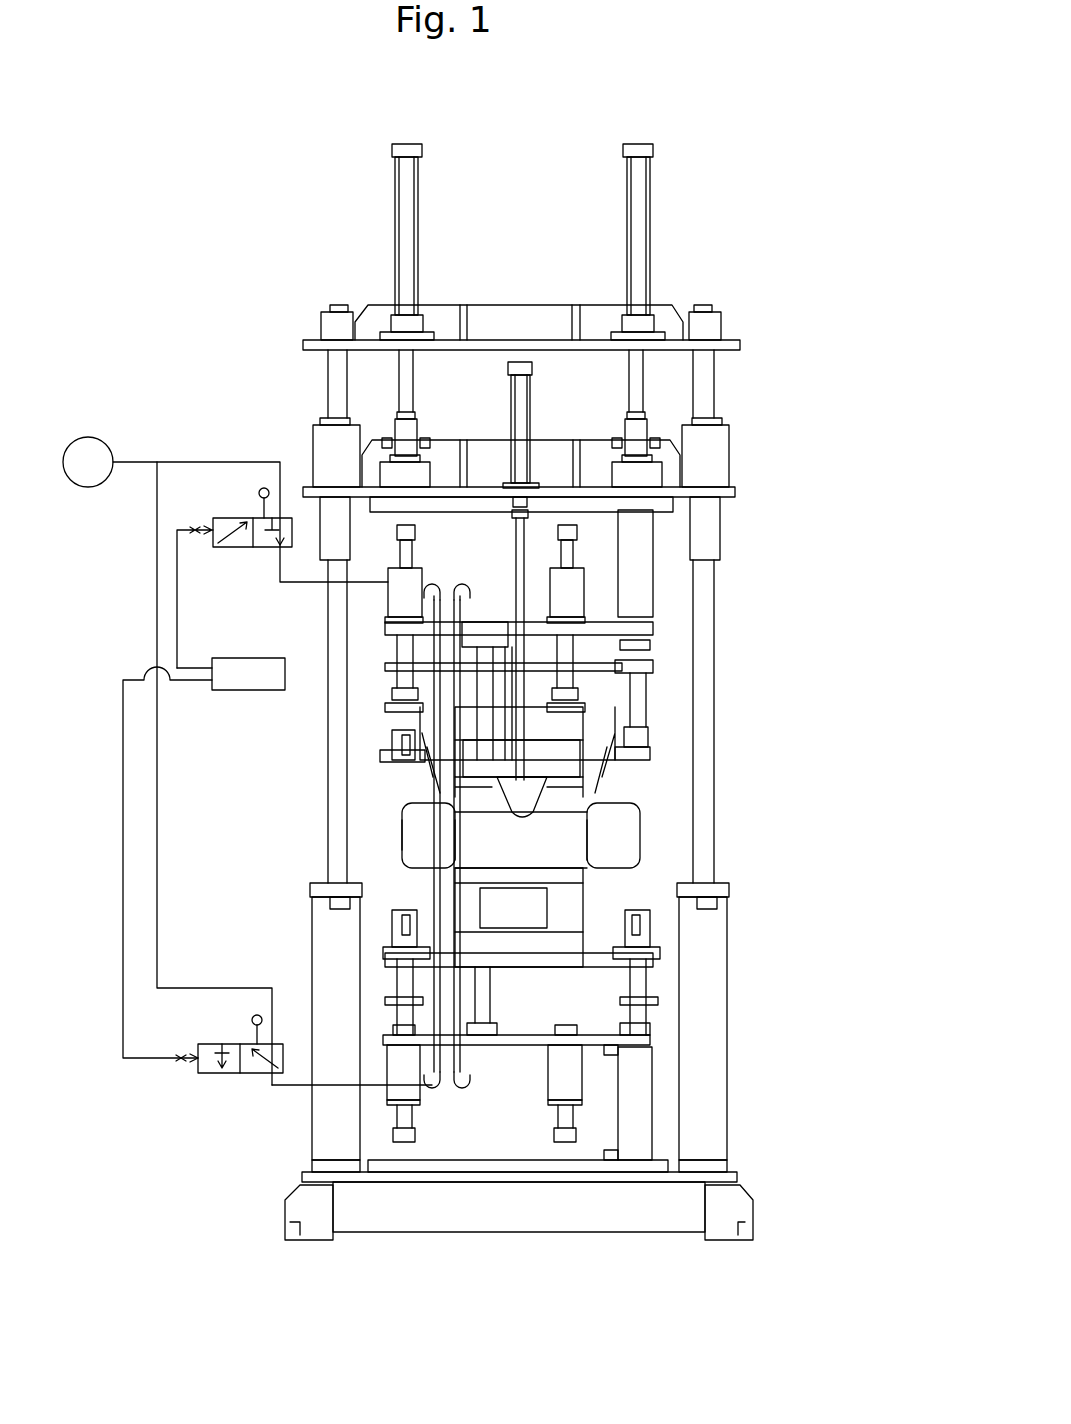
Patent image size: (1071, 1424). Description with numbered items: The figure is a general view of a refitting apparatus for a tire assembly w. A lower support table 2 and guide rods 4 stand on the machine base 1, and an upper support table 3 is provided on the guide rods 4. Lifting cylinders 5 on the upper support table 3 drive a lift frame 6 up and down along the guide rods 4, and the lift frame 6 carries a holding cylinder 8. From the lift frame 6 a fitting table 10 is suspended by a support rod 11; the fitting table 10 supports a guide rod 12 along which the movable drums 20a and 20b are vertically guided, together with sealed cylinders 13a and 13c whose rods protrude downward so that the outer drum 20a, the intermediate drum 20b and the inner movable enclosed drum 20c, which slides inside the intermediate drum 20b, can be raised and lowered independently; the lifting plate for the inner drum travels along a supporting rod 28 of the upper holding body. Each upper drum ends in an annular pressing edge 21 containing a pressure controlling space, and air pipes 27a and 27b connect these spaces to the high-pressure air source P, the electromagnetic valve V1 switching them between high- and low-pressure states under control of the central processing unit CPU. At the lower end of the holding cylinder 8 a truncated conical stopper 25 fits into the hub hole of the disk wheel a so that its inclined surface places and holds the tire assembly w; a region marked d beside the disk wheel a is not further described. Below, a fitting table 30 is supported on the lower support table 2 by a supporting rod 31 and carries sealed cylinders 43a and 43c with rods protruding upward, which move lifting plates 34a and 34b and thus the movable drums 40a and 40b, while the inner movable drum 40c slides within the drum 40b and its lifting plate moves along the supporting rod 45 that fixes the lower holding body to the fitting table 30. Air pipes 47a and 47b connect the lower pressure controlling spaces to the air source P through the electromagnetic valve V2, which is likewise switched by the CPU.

The machine base 1 is at (485, 1190).
The lower support table 2 is at (572, 1177).
The upper support table 3 is at (735, 343).
The guide rods 4 is at (702, 632).
The lifting cylinders 5 is at (405, 222).
The lift frame 6 is at (735, 487).
The holding cylinder 8 is at (522, 418).
The fitting table 10 is at (607, 630).
The support rod 11 is at (637, 547).
The guide rod 12 is at (633, 683).
The sealed cylinder 13a is at (388, 592).
The sealed cylinder 13c is at (582, 592).
The movable drum 20a is at (645, 725).
The movable drum 20b is at (600, 698).
The inner movable enclosed drum 20c is at (590, 745).
The annular pressing edge 21 is at (467, 760).
The truncated conical stopper 25 is at (525, 805).
The air pipe 27a is at (432, 585).
The air pipe 27b is at (462, 582).
The supporting rod 28 is at (482, 658).
The fitting table 30 is at (648, 1025).
The supporting rod 31 is at (638, 1125).
The lifting plate 34a is at (435, 980).
The lifting plate 34b is at (385, 1003).
The movable drum 40a is at (608, 958).
The movable drum 40b is at (580, 958).
The inner movable drum 40c is at (598, 965).
The sealed cylinder 43a is at (413, 1093).
The sealed cylinder 43c is at (555, 1085).
The supporting rod 45 is at (482, 997).
The air pipe 47a is at (440, 1088).
The air pipe 47b is at (455, 1055).
The disk wheel a is at (595, 828).
The workpiece portion d is at (400, 830).
The tire assembly w is at (642, 860).
The high-pressure air source P is at (225, 761).
The electromagnetic valve V1 is at (234, 578).
The electromagnetic valve V2 is at (229, 1063).
The central processing unit CPU is at (204, 858).